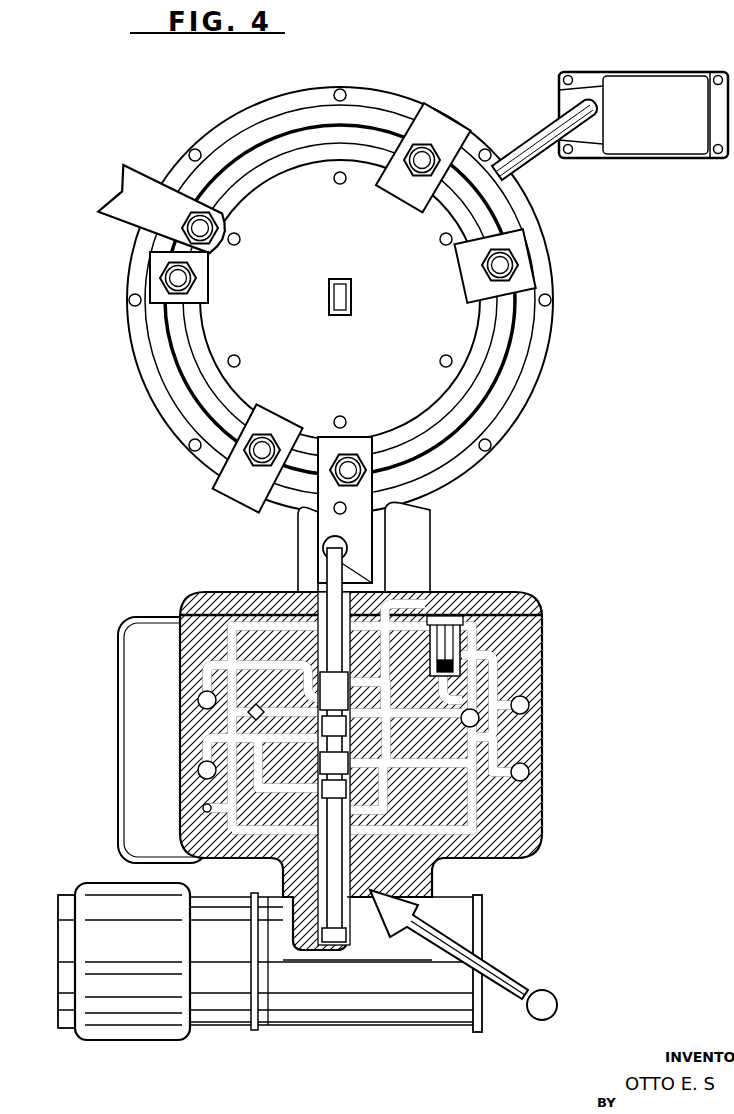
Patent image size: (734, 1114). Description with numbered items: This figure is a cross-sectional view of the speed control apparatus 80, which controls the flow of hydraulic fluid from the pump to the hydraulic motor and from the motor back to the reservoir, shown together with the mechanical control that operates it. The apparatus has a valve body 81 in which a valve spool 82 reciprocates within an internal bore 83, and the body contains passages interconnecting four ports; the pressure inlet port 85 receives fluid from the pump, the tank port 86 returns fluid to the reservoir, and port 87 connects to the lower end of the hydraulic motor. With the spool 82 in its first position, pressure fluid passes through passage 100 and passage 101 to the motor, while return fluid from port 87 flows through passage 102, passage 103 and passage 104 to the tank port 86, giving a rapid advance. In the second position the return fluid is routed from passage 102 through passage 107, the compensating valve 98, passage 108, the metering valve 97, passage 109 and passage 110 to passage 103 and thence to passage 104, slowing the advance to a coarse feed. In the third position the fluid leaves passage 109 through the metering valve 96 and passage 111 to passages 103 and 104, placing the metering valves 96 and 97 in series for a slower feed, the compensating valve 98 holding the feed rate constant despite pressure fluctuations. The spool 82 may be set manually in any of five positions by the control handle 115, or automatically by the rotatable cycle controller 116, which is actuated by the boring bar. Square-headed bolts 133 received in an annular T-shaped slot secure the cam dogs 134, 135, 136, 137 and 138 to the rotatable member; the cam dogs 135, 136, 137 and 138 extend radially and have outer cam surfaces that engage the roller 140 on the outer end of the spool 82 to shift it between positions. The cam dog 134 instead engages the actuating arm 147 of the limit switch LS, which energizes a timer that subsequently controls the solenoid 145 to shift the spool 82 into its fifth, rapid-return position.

The limit switch LS is at (672, 88).
The actuating arm 147 is at (545, 153).
The cam dog 135 is at (447, 143).
The square-headed bolts 133 is at (205, 262).
The cam dog 134 is at (528, 270).
The cam dog 136 is at (118, 226).
The cam dog 137 is at (233, 480).
The cam dog 138 is at (362, 507).
The roller 140 is at (323, 550).
The rotatable cycle controller 116 is at (352, 376).
The speed control apparatus 80 is at (366, 749).
The valve body 81 is at (487, 620).
The valve spool 82 is at (327, 588).
The internal bore 83 is at (340, 820).
The pressure inlet port 85 is at (198, 772).
The port 86 is at (530, 705).
The port 87 is at (531, 771).
The metering valve 96 is at (256, 706).
The metering valve 97 is at (470, 708).
The compensating valve 98 is at (451, 614).
The passage 100 is at (282, 745).
The passage 101 is at (290, 665).
The passage 102 is at (444, 786).
The passage 103 is at (378, 804).
The passage 104 is at (422, 753).
The passage 107 is at (508, 641).
The passage 108 is at (416, 698).
The passage 109 is at (372, 731).
The passage 110 is at (284, 775).
The passage 111 is at (266, 870).
The solenoid 145 is at (462, 930).
The control handle 115 is at (556, 1010).